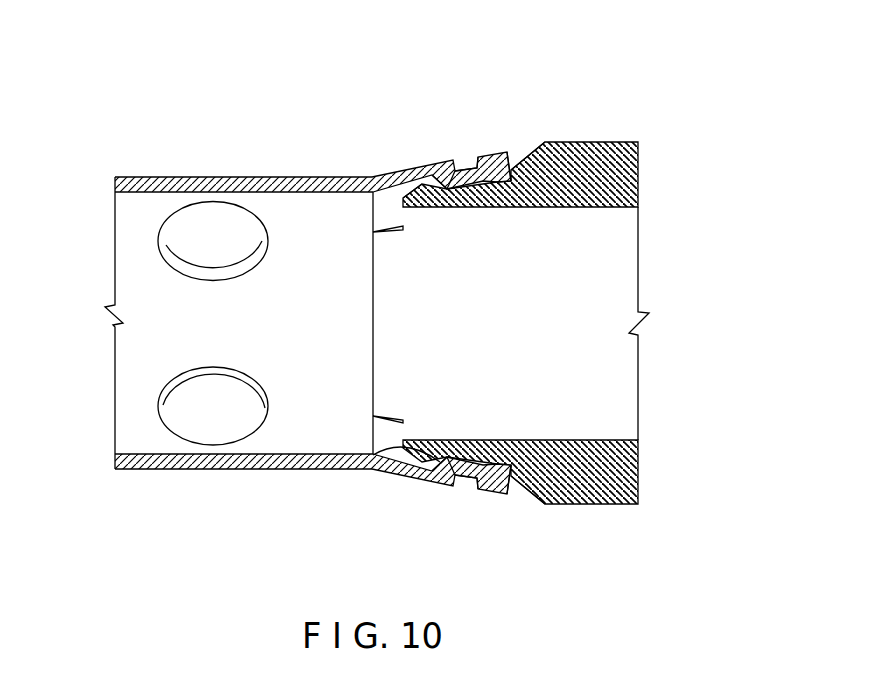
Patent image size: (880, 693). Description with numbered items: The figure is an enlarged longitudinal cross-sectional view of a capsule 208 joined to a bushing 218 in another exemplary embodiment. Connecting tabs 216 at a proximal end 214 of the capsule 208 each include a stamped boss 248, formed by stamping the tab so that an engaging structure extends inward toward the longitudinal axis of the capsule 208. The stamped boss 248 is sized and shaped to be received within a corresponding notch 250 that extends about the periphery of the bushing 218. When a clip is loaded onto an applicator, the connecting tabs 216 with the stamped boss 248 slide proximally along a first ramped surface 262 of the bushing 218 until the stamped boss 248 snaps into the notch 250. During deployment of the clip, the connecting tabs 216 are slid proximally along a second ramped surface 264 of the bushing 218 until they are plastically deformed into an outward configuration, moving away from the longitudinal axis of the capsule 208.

The capsule 208 is at (111, 139).
The proximal end 214 is at (360, 177).
The connecting tabs 216 is at (416, 168).
The bushing 218 is at (599, 115).
The stamped boss 248 is at (468, 165).
The notch 250 is at (383, 456).
The first ramped surface 262 is at (408, 192).
The second ramped surface 264 is at (522, 162).